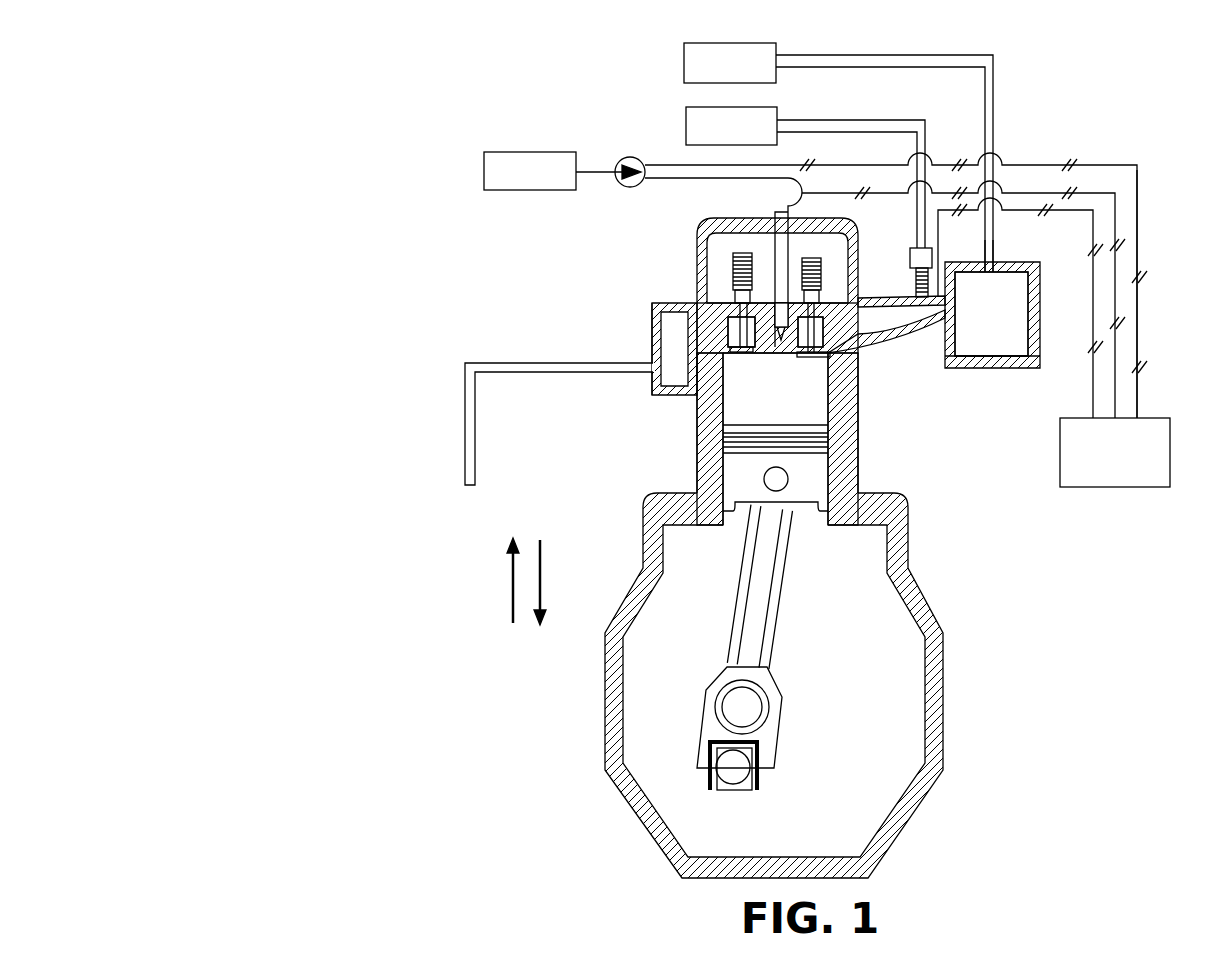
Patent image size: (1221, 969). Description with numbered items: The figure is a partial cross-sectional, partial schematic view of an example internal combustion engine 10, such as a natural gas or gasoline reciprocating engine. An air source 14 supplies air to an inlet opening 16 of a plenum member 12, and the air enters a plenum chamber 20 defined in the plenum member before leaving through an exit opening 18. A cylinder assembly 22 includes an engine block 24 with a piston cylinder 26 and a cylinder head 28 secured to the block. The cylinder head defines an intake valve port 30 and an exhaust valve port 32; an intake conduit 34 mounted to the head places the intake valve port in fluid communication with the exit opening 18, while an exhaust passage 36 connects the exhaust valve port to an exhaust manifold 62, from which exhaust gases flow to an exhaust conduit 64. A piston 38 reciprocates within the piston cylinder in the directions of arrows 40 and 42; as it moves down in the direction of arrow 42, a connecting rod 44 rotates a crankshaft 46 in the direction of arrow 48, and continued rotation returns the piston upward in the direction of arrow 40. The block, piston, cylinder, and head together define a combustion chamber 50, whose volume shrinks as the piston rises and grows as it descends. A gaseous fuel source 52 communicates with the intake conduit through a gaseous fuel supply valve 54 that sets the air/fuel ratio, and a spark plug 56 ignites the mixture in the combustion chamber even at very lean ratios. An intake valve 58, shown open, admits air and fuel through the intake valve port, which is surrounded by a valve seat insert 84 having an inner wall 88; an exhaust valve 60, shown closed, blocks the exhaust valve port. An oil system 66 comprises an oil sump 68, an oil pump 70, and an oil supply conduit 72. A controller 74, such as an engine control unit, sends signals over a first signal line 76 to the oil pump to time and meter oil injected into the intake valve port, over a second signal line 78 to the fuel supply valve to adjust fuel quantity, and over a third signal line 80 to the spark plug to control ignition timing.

The internal combustion engine 10 is at (292, 36).
The plenum member 12 is at (1043, 320).
The air source 14 is at (778, 47).
The inlet opening 16 is at (995, 255).
The exit opening 18 is at (950, 312).
The plenum chamber 20 is at (980, 356).
The cylinder assembly 22 is at (652, 461).
The engine block 24 is at (646, 500).
The piston cylinder 26 is at (823, 413).
The cylinder head 28 is at (697, 303).
The intake valve port 30 is at (815, 303).
The exhaust valve port 32 is at (733, 353).
The intake conduit 34 is at (914, 319).
The exhaust passage 36 is at (685, 328).
The piston 38 is at (817, 473).
The arrow 40 is at (508, 580).
The arrow 42 is at (542, 578).
The connecting rod 44 is at (757, 583).
The crankshaft 46 is at (762, 742).
The arrow 48 is at (762, 817).
The combustion chamber 50 is at (735, 413).
The gaseous fuel source 52 is at (779, 112).
The gaseous fuel supply valve 54 is at (932, 258).
The spark plug 56 is at (745, 325).
The intake valve 58 is at (833, 397).
The exhaust valve 60 is at (745, 353).
The exhaust manifold 62 is at (655, 352).
The exhaust conduit 64 is at (474, 440).
The oil system 66 is at (526, 200).
The oil sump 68 is at (484, 172).
The oil pump 70 is at (628, 187).
The oil supply conduit 72 is at (772, 177).
The controller 74 is at (1115, 487).
The first signal line 76 is at (1140, 325).
The second signal line 78 is at (1093, 370).
The third signal line 80 is at (1118, 250).
The valve seat insert 84 is at (857, 339).
The inner wall 88 is at (813, 357).